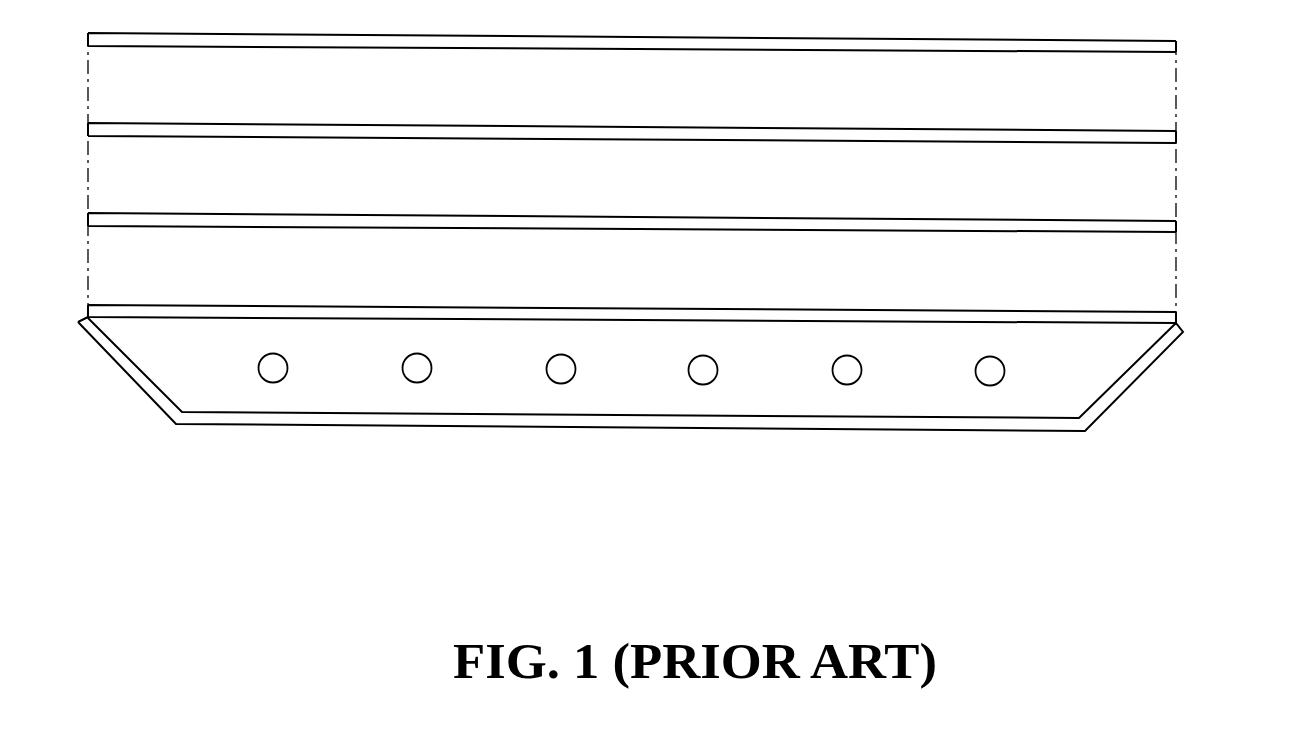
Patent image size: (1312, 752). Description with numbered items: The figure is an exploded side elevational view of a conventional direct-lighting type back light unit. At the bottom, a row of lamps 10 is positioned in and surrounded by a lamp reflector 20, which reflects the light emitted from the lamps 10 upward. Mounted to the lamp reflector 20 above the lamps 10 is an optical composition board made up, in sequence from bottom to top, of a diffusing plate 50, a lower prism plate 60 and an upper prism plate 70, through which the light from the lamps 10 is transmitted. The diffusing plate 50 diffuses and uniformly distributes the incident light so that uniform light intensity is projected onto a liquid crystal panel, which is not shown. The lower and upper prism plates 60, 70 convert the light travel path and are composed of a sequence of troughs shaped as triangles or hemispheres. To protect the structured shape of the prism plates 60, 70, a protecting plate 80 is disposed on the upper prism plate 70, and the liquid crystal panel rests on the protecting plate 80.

The lamps 10 is at (273, 376).
The lamp reflector 20 is at (359, 420).
The diffusing plate 50 is at (1176, 316).
The lower prism plate 60 is at (1176, 226).
The upper prism plate 70 is at (1176, 136).
The protecting plate 80 is at (1176, 45).